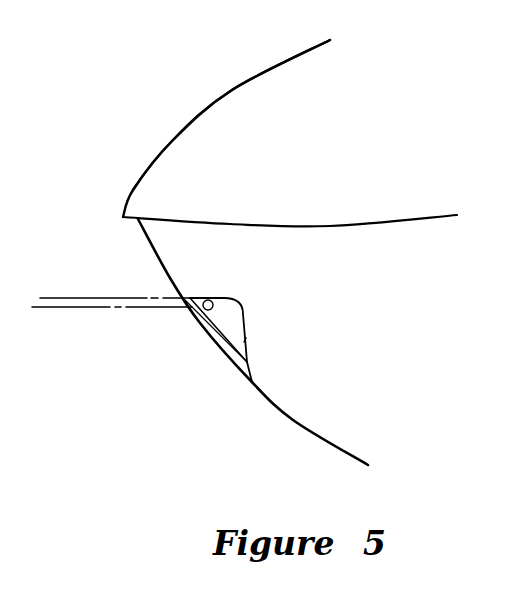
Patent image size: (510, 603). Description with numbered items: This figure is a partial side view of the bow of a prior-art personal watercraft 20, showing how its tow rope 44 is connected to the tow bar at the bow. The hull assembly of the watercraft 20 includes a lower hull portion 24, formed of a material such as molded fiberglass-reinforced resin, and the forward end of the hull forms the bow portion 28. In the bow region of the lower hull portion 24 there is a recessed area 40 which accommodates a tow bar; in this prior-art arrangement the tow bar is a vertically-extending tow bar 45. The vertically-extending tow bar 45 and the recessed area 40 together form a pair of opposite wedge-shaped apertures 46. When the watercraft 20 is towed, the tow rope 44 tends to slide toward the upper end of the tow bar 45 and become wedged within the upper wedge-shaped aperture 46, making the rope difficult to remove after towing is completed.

The watercraft 20 is at (110, 85).
The bow portion 28 is at (232, 90).
The lower hull portion 24 is at (293, 420).
The tow rope 44 is at (75, 298).
The recessed area 40 is at (242, 318).
The vertically-extending tow bar 45 is at (208, 337).
The wedge-shaped apertures 46 is at (216, 298).